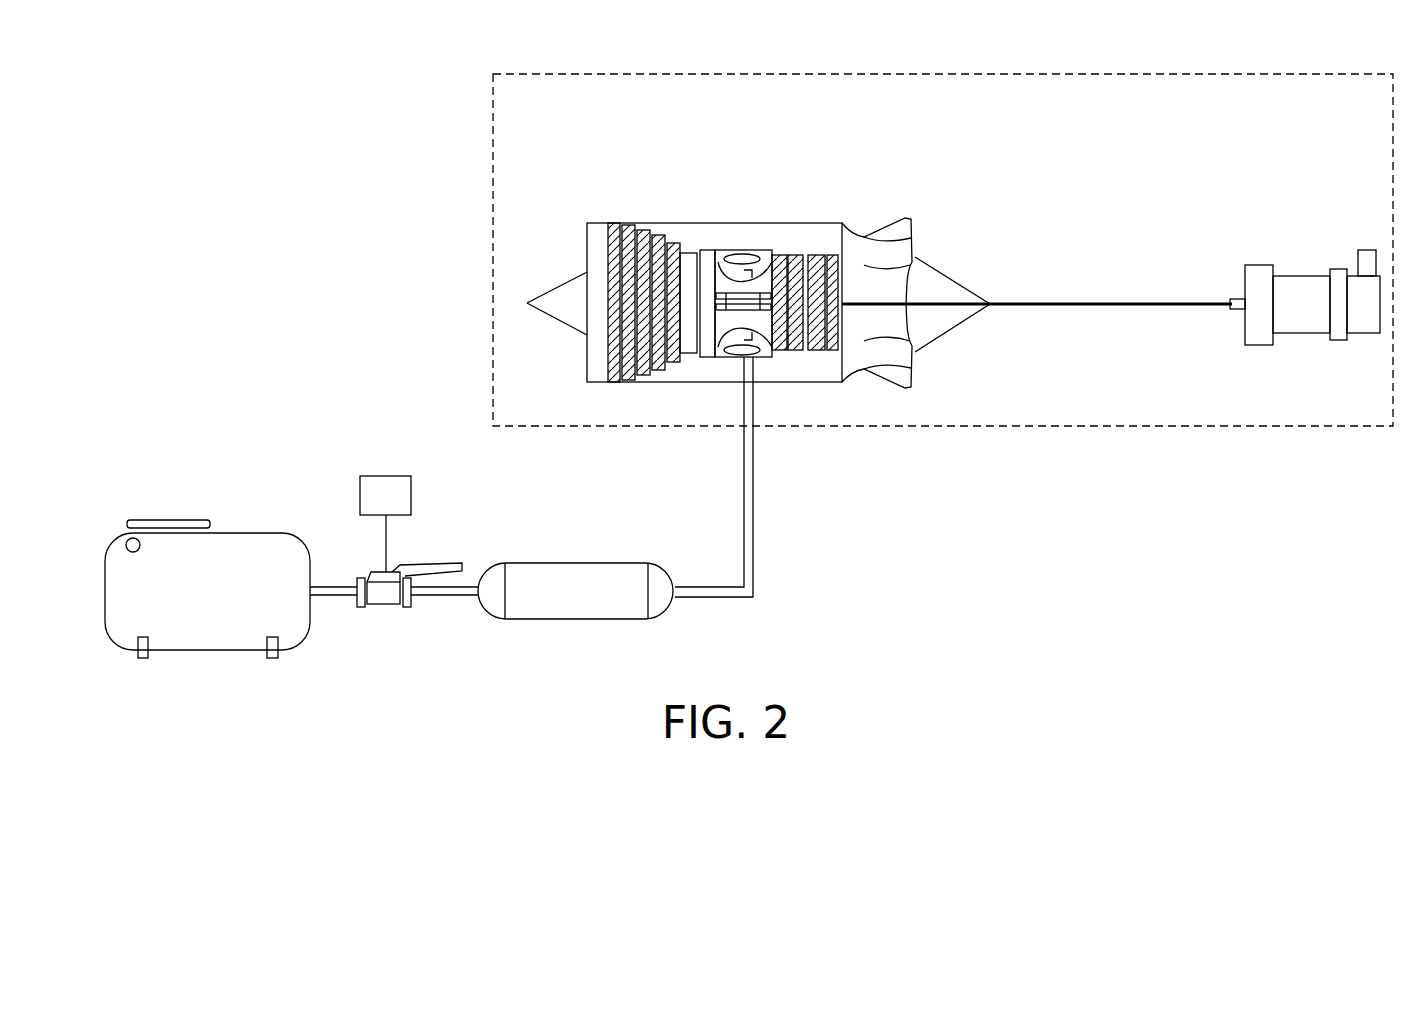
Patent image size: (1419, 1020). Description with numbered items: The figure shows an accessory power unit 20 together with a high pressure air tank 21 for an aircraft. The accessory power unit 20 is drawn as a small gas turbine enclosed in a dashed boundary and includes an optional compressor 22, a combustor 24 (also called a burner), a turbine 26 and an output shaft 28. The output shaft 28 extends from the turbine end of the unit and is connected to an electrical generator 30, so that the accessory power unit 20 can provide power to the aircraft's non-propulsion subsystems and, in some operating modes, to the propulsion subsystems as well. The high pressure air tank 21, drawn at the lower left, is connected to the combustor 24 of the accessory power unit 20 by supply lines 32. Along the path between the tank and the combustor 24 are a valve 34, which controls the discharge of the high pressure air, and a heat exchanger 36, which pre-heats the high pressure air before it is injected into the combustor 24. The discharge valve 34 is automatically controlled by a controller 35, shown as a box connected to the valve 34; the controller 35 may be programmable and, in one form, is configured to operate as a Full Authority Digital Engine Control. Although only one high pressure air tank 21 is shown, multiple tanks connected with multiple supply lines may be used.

The accessory power unit 20 is at (550, 73).
The high pressure air tank 21 is at (247, 533).
The compressor 22 is at (682, 245).
The combustor 24 is at (762, 252).
The turbine 26 is at (866, 231).
The output shaft 28 is at (1155, 300).
The electrical generator 30 is at (1300, 276).
The supply lines 32 is at (755, 528).
The valve 34 is at (386, 606).
The controller 35 is at (385, 524).
The heat exchanger 36 is at (582, 620).